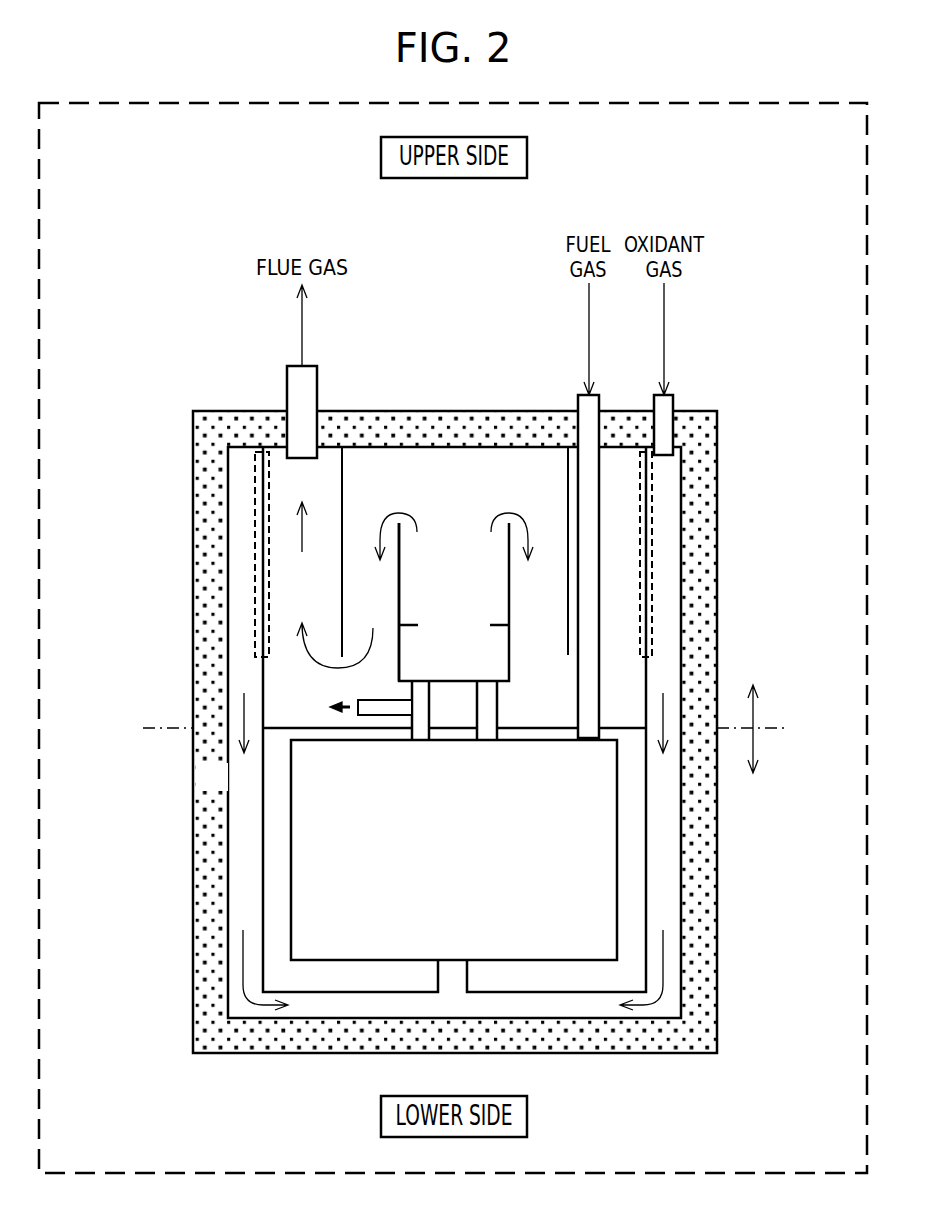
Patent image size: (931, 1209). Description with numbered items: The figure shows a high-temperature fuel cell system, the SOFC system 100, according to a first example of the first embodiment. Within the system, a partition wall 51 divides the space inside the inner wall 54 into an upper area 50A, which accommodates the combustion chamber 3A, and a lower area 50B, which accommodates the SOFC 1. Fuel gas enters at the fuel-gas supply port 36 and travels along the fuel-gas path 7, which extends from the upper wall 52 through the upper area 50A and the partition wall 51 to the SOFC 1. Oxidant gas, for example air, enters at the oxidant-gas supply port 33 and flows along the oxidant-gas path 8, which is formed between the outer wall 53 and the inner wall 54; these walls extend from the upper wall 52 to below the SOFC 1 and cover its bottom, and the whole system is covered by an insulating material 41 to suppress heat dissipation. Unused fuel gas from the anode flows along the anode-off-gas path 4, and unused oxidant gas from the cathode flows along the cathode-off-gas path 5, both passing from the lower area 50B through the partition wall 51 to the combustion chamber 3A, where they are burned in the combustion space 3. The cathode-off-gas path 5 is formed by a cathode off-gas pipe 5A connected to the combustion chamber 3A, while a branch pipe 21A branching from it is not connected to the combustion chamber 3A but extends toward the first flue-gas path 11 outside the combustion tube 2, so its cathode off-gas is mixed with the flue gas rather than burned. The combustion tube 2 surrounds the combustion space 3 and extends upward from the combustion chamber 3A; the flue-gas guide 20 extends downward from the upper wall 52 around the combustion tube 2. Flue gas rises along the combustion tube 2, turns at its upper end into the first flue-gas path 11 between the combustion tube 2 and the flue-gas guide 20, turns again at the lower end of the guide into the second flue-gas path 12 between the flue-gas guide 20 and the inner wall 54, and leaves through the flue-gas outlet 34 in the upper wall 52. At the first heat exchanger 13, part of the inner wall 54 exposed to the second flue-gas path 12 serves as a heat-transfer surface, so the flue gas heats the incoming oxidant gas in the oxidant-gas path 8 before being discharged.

The SOFC system 100 is at (432, 222).
The SOFC 1 is at (461, 854).
The combustion tube 2 is at (400, 562).
The combustion space 3 is at (461, 656).
The combustion chamber 3A is at (514, 662).
The anode-off-gas path 4 is at (498, 710).
The cathode-off-gas path 5 is at (340, 707).
The cathode off-gas pipe 5A is at (412, 692).
The fuel-gas path 7 is at (600, 513).
The oxidant-gas path 8 is at (671, 686).
The first flue-gas path 11 is at (386, 592).
The second flue-gas path 12 is at (318, 592).
The first heat exchanger 13 is at (255, 558).
The flue-gas guide 20 is at (342, 495).
The branch pipe 21A is at (382, 715).
The oxidant-gas supply port 33 is at (675, 408).
The flue-gas outlet 34 is at (286, 402).
The fuel-gas supply port 36 is at (577, 408).
The insulating material 41 is at (228, 787).
The upper area 50A is at (753, 714).
The lower area 50B is at (752, 797).
The partition wall 51 is at (618, 727).
The upper wall 52 is at (503, 443).
The outer wall 53 is at (682, 558).
The inner wall 54 is at (647, 557).